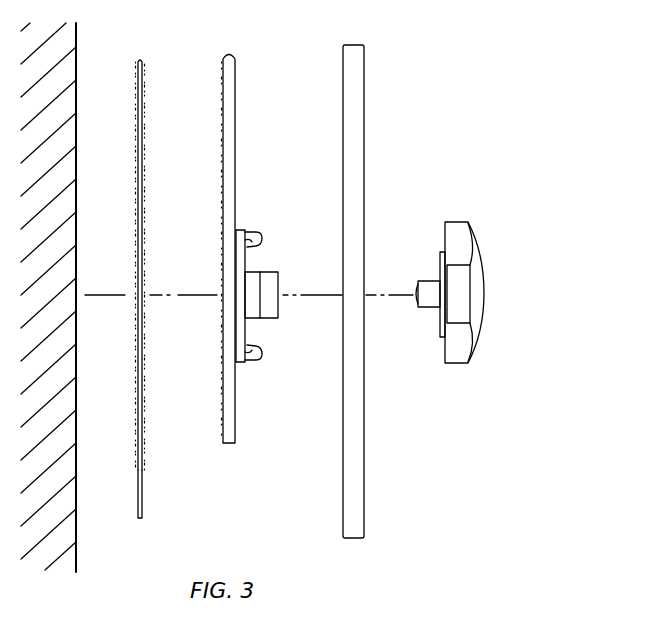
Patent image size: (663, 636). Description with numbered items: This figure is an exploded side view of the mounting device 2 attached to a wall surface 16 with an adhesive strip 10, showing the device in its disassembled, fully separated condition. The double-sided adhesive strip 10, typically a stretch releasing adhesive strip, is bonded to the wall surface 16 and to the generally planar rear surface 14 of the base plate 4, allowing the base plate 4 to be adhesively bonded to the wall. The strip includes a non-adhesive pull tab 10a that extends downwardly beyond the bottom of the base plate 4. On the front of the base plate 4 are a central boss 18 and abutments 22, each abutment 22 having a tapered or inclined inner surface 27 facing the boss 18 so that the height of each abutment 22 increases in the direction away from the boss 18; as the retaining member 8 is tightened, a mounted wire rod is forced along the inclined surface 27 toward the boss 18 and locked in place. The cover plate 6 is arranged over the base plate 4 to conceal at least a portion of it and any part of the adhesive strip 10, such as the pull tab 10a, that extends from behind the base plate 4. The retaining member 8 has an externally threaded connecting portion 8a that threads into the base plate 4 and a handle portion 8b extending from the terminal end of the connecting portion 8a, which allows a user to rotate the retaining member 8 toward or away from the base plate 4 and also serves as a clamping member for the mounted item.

The mounting device 2 is at (478, 88).
The base plate 4 is at (229, 54).
The cover plate 6 is at (355, 60).
The retaining member 8 is at (478, 292).
The connecting portion 8a is at (430, 308).
The handle portion 8b is at (455, 235).
The adhesive strip 10 is at (139, 60).
The pull tab 10a is at (142, 505).
The rear surface 14 is at (226, 421).
The wall surface 16 is at (66, 534).
The central boss 18 is at (268, 272).
The abutments 22 is at (251, 232).
The inclined inner surface 27 is at (254, 250).